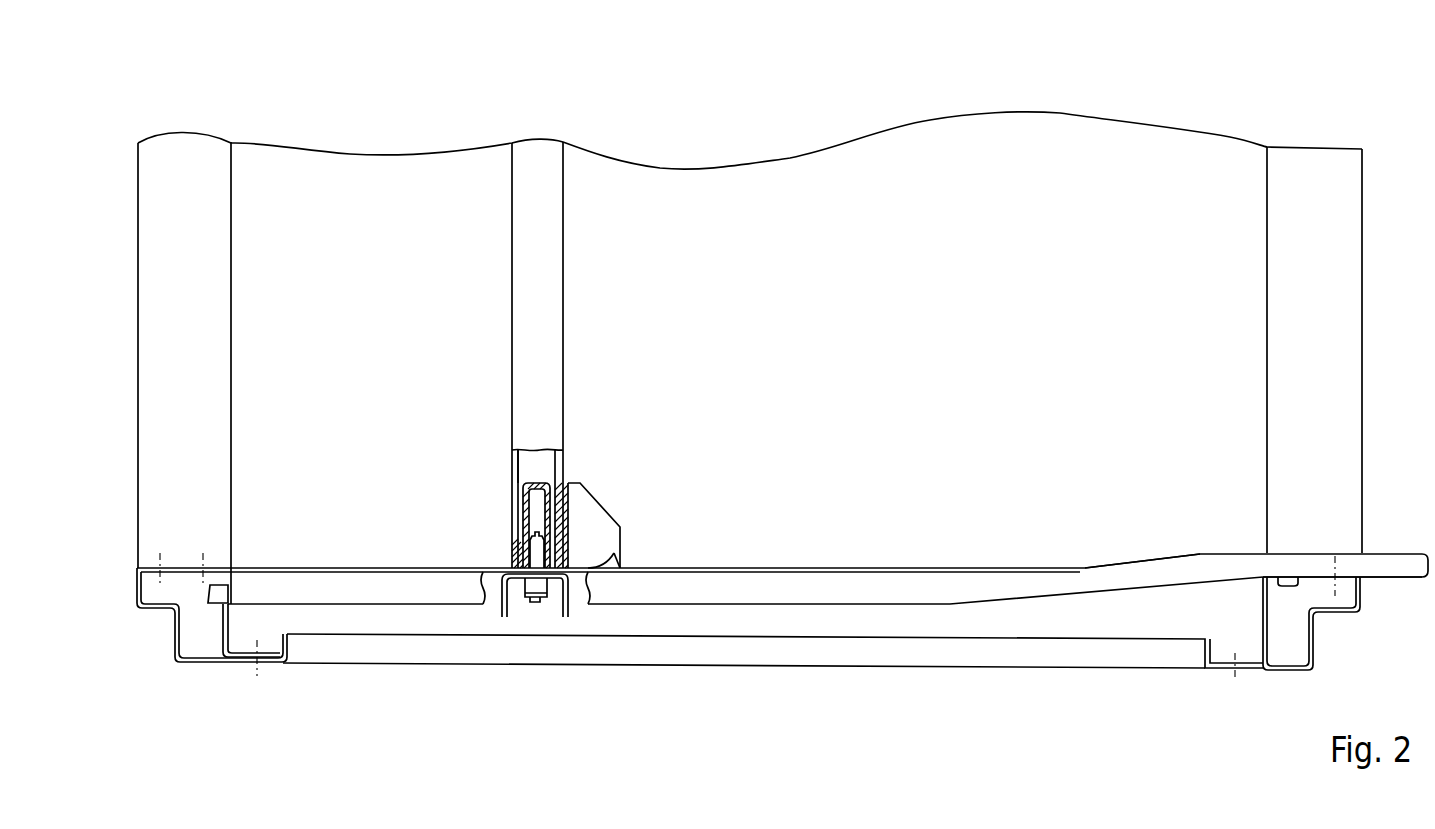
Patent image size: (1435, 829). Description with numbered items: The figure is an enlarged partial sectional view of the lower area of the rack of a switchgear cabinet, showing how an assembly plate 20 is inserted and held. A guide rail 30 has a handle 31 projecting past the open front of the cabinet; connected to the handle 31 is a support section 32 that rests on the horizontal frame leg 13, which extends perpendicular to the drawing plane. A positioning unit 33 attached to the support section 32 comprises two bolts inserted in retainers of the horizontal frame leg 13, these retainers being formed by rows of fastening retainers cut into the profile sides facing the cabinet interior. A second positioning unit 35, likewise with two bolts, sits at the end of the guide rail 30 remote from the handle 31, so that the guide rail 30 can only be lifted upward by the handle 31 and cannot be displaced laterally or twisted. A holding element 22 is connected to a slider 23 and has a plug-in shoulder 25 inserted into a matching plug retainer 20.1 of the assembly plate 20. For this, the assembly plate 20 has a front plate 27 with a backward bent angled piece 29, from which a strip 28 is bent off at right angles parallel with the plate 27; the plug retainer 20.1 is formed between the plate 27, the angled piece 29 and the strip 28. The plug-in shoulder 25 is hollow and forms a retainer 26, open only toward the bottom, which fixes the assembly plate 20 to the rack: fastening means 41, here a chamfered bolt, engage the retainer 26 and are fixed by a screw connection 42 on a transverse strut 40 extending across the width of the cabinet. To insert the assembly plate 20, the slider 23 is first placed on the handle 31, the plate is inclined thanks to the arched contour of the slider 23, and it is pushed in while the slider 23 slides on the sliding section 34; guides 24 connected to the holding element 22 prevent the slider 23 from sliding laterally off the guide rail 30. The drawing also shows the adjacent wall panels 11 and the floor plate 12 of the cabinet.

The wall panel 11 is at (210, 296).
The floor plate 12 is at (235, 689).
The horizontal frame leg 13 is at (198, 627).
The assembly plate 20 is at (553, 269).
The plug retainer 20.1 is at (533, 458).
The holding element 22 is at (633, 478).
The slider 23 is at (612, 563).
The guides 24 is at (614, 562).
The plug-in shoulder 25 is at (518, 488).
The retainer 26 is at (528, 509).
The front plate 27 is at (557, 457).
The strip 28 is at (508, 457).
The angled piece 29 is at (522, 352).
The guide rail 30 is at (962, 510).
The handle 31 is at (1407, 555).
The support section 32 is at (1316, 558).
The positioning unit 33 is at (1290, 584).
The sliding section 34 is at (1088, 565).
The second positioning unit 35 is at (217, 590).
The transverse strut 40 is at (500, 612).
The fastening means 41 is at (530, 548).
The screw connection 42 is at (543, 583).